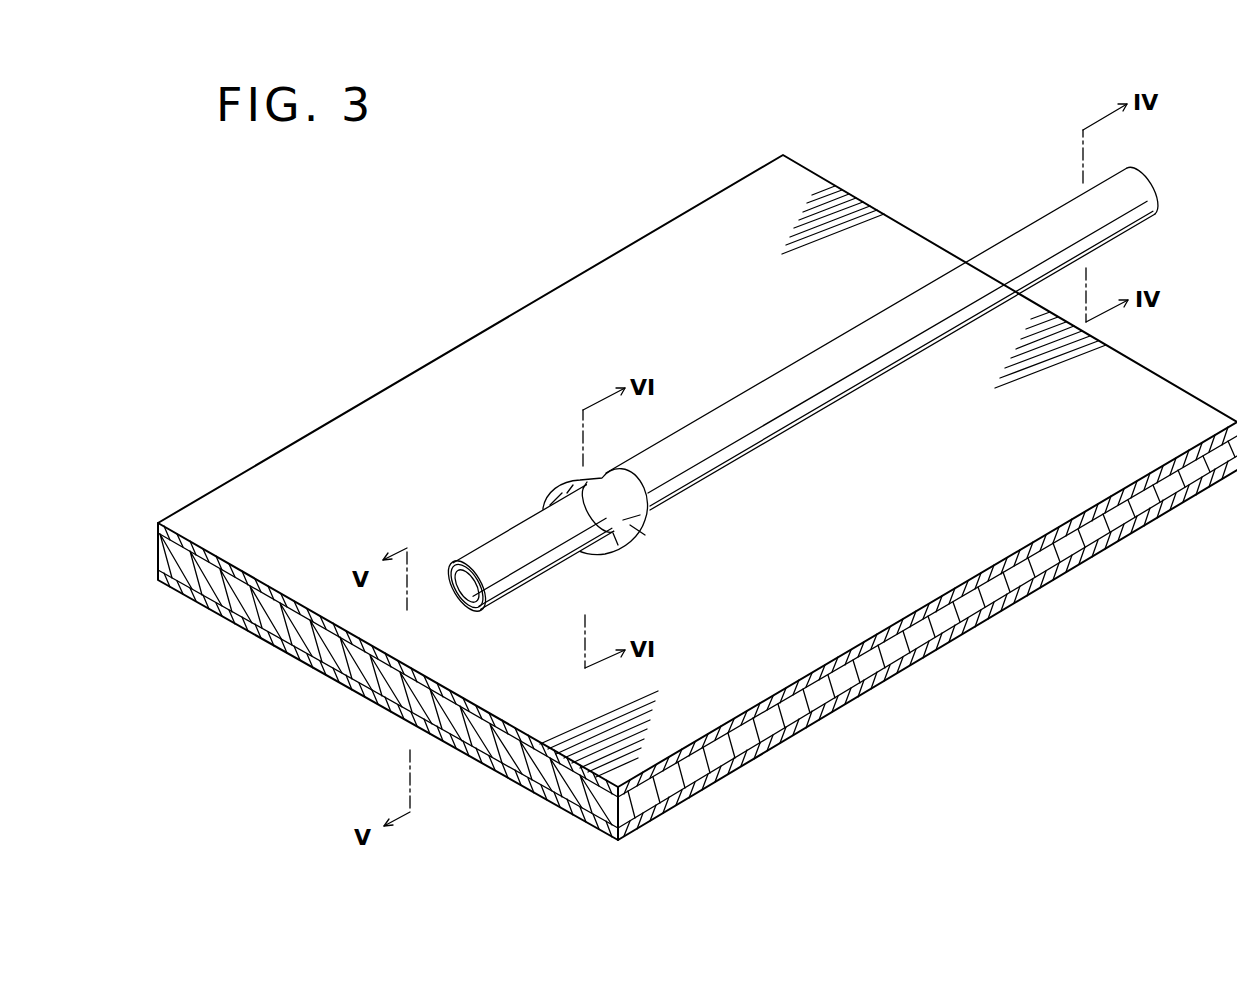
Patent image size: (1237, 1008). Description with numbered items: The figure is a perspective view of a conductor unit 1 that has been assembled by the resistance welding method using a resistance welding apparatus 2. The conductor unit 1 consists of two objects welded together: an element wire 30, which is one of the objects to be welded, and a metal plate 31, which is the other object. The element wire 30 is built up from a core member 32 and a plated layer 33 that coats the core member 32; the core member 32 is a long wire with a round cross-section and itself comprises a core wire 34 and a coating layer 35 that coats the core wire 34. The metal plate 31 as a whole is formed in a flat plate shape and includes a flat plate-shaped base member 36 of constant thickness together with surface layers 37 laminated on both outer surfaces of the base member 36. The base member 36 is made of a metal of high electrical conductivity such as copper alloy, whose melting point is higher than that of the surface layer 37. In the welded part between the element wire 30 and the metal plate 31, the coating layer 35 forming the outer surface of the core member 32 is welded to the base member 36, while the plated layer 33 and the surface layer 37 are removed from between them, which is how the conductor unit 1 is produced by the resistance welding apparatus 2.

The conductor unit 1 is at (697, 481).
The resistance welding apparatus 2 is at (1105, 247).
The element wire 30 is at (831, 509).
The metal plate 31 is at (834, 718).
The core member 32 is at (527, 690).
The plated layer 33 is at (460, 568).
The core wire 34 is at (468, 592).
The coating layer 35 is at (481, 608).
The base member 36 is at (881, 657).
The surface layer 37 is at (1027, 595).